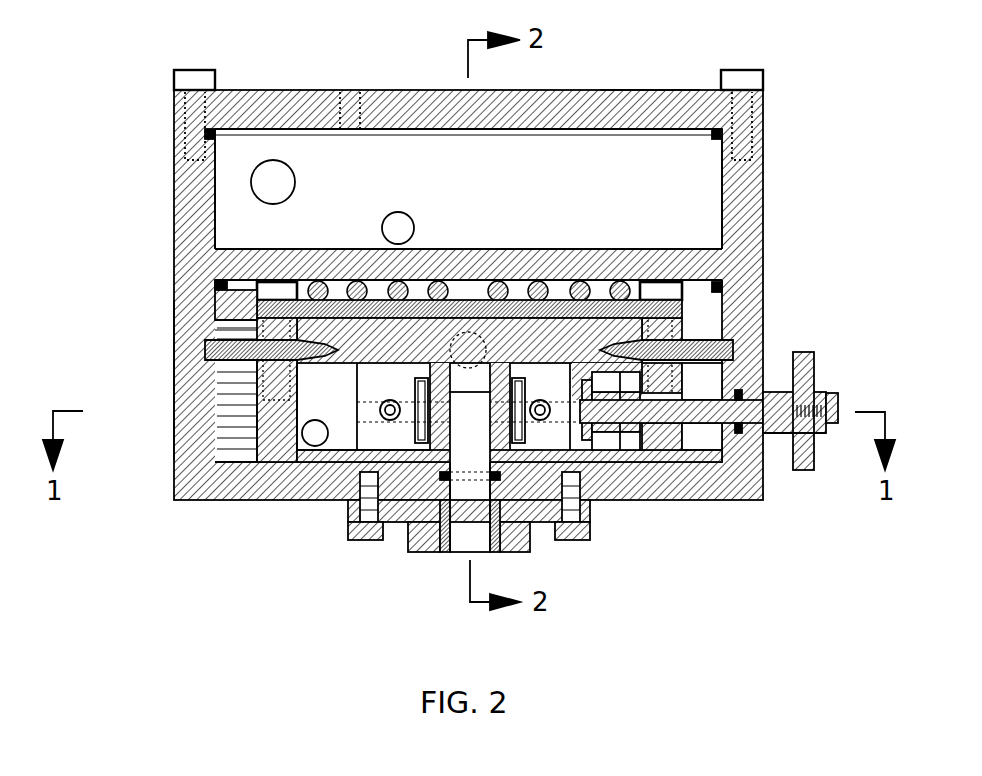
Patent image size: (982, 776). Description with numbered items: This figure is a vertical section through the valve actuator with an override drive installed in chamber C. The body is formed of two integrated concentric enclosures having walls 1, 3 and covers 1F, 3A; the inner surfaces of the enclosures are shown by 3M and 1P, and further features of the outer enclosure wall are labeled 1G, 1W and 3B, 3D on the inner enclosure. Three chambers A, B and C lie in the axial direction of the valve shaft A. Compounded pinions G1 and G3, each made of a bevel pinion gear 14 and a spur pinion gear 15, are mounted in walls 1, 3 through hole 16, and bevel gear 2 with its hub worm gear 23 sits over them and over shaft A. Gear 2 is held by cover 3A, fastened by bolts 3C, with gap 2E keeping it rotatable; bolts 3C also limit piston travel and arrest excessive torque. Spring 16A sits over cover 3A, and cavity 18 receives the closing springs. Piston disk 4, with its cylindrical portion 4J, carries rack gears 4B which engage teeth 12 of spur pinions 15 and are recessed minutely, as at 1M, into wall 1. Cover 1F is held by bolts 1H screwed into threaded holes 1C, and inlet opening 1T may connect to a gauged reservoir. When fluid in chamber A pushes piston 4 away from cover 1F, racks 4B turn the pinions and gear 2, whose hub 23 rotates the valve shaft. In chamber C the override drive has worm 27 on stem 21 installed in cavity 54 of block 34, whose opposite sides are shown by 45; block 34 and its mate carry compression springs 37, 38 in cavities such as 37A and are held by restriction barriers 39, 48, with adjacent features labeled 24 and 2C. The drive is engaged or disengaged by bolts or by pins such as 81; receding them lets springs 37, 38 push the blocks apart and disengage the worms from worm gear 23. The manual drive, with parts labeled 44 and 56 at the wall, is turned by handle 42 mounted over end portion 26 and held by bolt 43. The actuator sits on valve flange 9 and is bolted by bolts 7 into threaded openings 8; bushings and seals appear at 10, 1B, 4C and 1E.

The wall 1 is at (764, 291).
The bolt 1H is at (200, 70).
The housing bolt 1G is at (174, 100).
The seal 1B is at (742, 140).
The recess 1M is at (247, 118).
The inlet opening 1T is at (352, 118).
The cover 1F is at (650, 90).
The inner surface 1P is at (722, 178).
The threaded hole 1C is at (185, 150).
The housing wall 1W is at (175, 412).
The seal 1E is at (500, 465).
The chamber A is at (273, 182).
The chamber B is at (398, 228).
The chamber C is at (315, 433).
The piston disk 4 is at (305, 252).
The cover 3A is at (335, 275).
The bearing portion 3B is at (530, 310).
The bevel pinion gear 14 is at (463, 278).
The bolt 3C is at (283, 288).
The compounded pinion G1 is at (683, 328).
The seal 4C is at (213, 276).
The gap 2E is at (572, 310).
The bevel gear 2 is at (350, 362).
The spring 16A is at (468, 335).
The bearing support 3D is at (235, 435).
The spur pinion gear 15 is at (257, 370).
The teeth 12 is at (257, 340).
The inner surface 3M is at (237, 462).
The hole 16 is at (205, 347).
The cylindrical portion 4J is at (615, 342).
The compounded pinion G3 is at (232, 347).
The block 34 is at (367, 424).
The rack gear 4B is at (297, 395).
The sides of block 45 is at (353, 448).
The restriction barrier 39 is at (297, 458).
The cavity 54 is at (422, 446).
The worm 27 is at (417, 436).
The cavity 37A is at (388, 400).
The compression spring 37 is at (397, 398).
The compression spring 38 is at (534, 420).
The restriction barrier 48 is at (648, 462).
The recess 24 is at (690, 403).
The wall 3 is at (707, 460).
The shaft 44 is at (767, 392).
The seal 56 is at (740, 392).
The handle 42 is at (803, 352).
The bolt 43 is at (835, 395).
The end portion 26 is at (767, 433).
The cavity 18 is at (713, 462).
The stem 21 is at (460, 420).
The seal 2C is at (438, 462).
The bolt 7 is at (355, 540).
The threaded opening 8 is at (362, 485).
The pin 81 is at (348, 535).
The flange 9 is at (590, 512).
The bushing 10 is at (430, 530).
The worm gear 23 is at (453, 462).